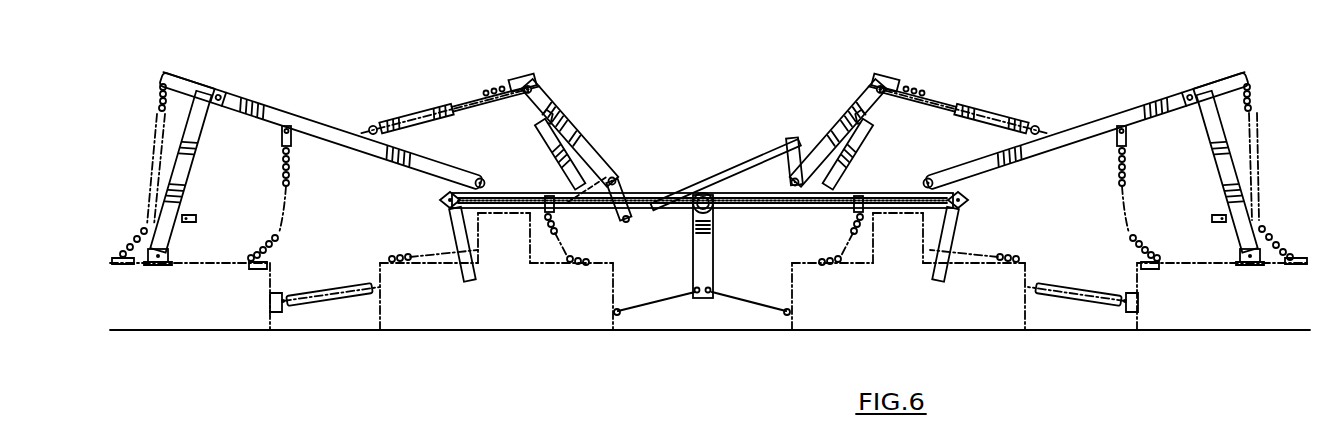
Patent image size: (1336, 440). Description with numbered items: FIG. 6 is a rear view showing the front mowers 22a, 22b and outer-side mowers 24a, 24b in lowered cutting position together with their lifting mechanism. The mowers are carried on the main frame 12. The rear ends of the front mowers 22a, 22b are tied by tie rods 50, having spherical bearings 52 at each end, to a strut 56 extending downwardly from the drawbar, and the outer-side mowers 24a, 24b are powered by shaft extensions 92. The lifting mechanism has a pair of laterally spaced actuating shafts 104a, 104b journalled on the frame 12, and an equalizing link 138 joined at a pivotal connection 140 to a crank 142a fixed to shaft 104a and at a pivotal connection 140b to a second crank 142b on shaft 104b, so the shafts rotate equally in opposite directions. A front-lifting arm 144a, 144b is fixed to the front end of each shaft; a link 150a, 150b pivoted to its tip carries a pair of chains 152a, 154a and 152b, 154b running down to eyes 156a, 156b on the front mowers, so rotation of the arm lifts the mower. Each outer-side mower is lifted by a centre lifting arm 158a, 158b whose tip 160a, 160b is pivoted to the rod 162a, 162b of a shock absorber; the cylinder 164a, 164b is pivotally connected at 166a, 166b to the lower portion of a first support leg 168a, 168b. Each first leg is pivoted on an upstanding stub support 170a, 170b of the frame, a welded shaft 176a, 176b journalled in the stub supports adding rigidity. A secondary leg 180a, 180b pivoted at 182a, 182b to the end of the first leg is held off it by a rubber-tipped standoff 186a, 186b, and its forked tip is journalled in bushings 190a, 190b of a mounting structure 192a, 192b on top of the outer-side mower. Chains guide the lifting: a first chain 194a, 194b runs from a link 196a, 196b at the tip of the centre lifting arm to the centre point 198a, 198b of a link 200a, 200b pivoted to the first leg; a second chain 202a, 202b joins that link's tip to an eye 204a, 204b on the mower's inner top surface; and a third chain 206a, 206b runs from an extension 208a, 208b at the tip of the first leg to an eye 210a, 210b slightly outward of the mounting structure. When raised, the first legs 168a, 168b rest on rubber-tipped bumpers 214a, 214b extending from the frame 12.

The main frame 12 is at (742, 210).
The front mower 22a is at (427, 322).
The front mower 22b is at (972, 322).
The outer-side mower 24a is at (262, 322).
The outer-side mower 24b is at (1210, 322).
The tie rod 50 is at (660, 302).
The spherical bearing 52 is at (690, 289).
The strut 56 is at (714, 252).
The shaft extension 92 is at (305, 296).
The actuating shaft 104a is at (615, 177).
The actuating shaft 104b is at (790, 203).
The equalizing link 138 is at (717, 190).
The pivotal connection 140 is at (630, 220).
The pivotal connection 140b is at (788, 165).
The crank 142a is at (623, 181).
The second crank 142b is at (770, 150).
The front-lifting arm 144a is at (561, 189).
The front-lifting arm 144b is at (847, 188).
The link 150a is at (560, 222).
The link 150b is at (858, 220).
The chain 152a is at (453, 252).
The chain 152b is at (968, 258).
The chain 154a is at (577, 257).
The chain 154b is at (838, 257).
The eye 156a is at (389, 264).
The eye 156b is at (815, 266).
The centre lifting arm 158a is at (580, 128).
The centre lifting arm 158b is at (836, 110).
The tip 160a is at (538, 94).
The tip 160b is at (873, 86).
The rod 162a is at (500, 97).
The rod 162b is at (926, 98).
The shock absorber cylinder 164a is at (416, 122).
The shock absorber cylinder 164b is at (990, 126).
The pivotal connection 166a is at (373, 126).
The pivotal connection 166b is at (1034, 126).
The first support leg 168a is at (318, 122).
The first support leg 168b is at (1106, 114).
The stub support 170a is at (445, 197).
The stub support 170b is at (958, 195).
The shaft 176a is at (498, 169).
The shaft 176b is at (943, 187).
The secondary leg 180a is at (192, 161).
The secondary leg 180b is at (1226, 185).
The pivot 182a is at (222, 93).
The pivot 182b is at (1190, 94).
The rubber-tipped standoff 186a is at (187, 215).
The rubber-tipped standoff 186b is at (1216, 219).
The bushing 190a is at (170, 254).
The bushing 190b is at (1240, 256).
The mounting structure 192a is at (178, 265).
The mounting structure 192b is at (1255, 268).
The first chain 194a is at (455, 108).
The first chain 194b is at (952, 106).
The link 196a is at (529, 86).
The link 196b is at (893, 86).
The centre point 198a is at (281, 135).
The centre point 198b is at (1126, 135).
The link 200a is at (290, 168).
The link 200b is at (1124, 168).
The second chain 202a is at (288, 193).
The second chain 202b is at (1118, 226).
The eye 204a is at (255, 268).
The eye 204b is at (1153, 268).
The third chain 206a is at (157, 114).
The third chain 206b is at (1253, 90).
The extension 208a is at (193, 78).
The extension 208b is at (1225, 82).
The eye 210a is at (130, 264).
The eye 210b is at (1290, 266).
The rubber-tipped bumper 214a is at (553, 144).
The rubber-tipped bumper 214b is at (862, 143).